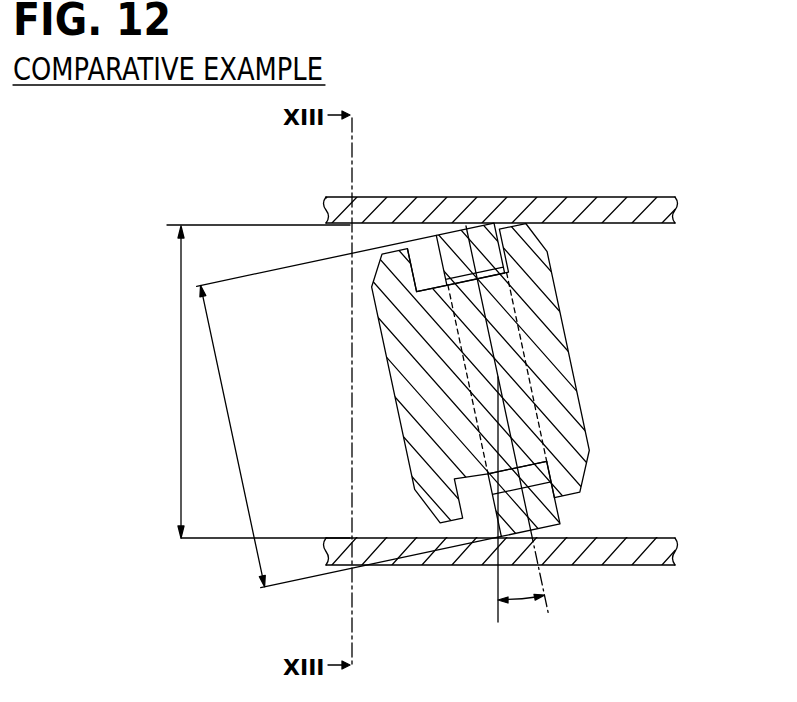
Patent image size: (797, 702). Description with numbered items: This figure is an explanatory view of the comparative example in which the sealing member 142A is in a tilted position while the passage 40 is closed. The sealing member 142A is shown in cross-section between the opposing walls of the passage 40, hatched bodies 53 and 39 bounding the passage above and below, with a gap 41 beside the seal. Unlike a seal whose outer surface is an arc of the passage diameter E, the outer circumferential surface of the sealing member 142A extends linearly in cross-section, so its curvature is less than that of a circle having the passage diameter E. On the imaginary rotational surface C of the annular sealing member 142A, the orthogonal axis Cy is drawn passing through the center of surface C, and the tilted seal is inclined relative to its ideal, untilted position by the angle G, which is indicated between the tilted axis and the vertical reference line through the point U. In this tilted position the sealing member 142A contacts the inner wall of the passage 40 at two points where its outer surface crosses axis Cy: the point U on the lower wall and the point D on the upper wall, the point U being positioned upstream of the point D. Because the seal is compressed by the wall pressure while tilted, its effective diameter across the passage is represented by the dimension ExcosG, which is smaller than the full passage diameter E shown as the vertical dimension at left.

The block member 39 is at (570, 412).
The passage 40 is at (582, 537).
The clearance gap 41 is at (432, 268).
The upper plate 53 is at (572, 210).
The sealing member 142A is at (492, 246).
The imaginary rotational surface C is at (478, 252).
The point D is at (500, 223).
The passage diameter E is at (253, 381).
The diameter E*cos G ExcosG is at (349, 411).
The point U is at (498, 540).
The angle G is at (521, 615).